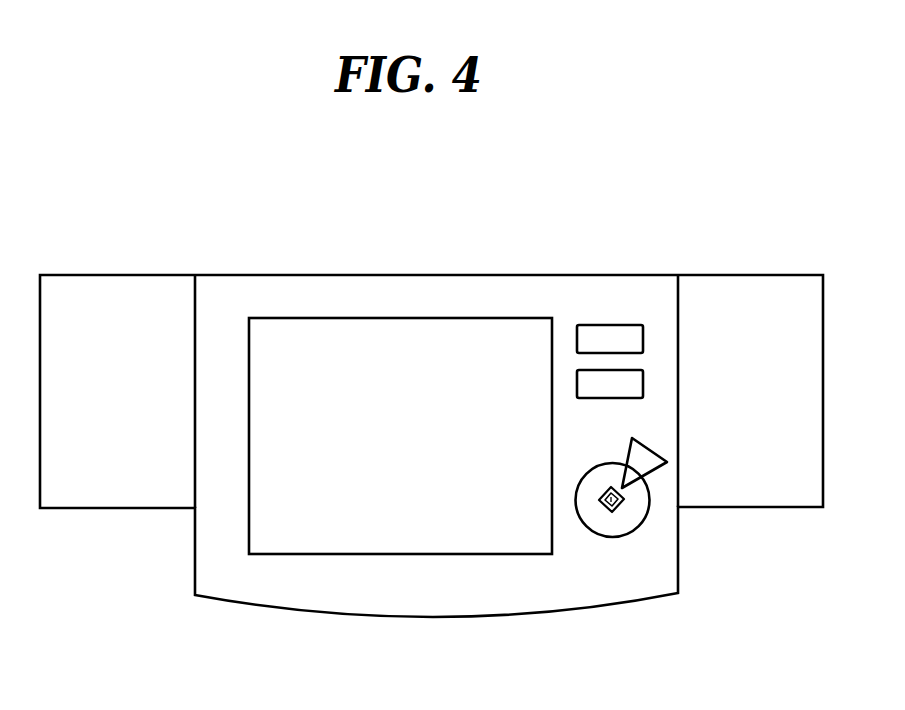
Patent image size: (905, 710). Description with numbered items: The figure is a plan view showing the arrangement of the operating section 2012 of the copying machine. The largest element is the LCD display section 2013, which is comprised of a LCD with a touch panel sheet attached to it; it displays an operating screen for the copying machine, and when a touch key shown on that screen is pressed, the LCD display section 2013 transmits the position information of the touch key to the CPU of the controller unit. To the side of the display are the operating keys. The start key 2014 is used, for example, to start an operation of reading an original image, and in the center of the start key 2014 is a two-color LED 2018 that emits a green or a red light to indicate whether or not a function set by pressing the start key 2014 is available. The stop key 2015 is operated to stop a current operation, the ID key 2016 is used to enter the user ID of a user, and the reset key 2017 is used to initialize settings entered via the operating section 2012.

The operating section 2012 is at (363, 275).
The LCD display section 2013 is at (347, 513).
The start key 2014 is at (610, 538).
The stop key 2015 is at (641, 460).
The ID key 2016 is at (617, 380).
The reset key 2017 is at (604, 333).
The two-color LED 2018 is at (620, 507).